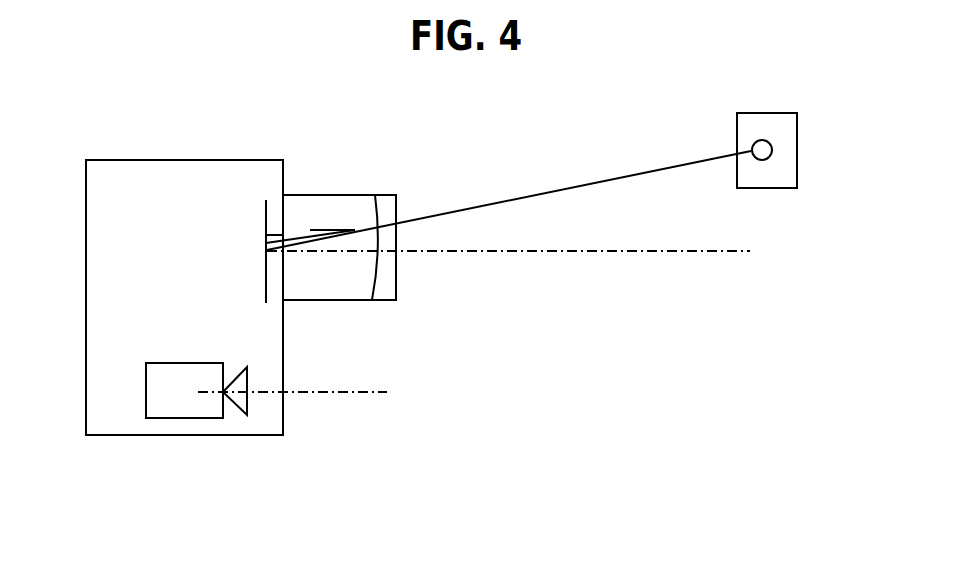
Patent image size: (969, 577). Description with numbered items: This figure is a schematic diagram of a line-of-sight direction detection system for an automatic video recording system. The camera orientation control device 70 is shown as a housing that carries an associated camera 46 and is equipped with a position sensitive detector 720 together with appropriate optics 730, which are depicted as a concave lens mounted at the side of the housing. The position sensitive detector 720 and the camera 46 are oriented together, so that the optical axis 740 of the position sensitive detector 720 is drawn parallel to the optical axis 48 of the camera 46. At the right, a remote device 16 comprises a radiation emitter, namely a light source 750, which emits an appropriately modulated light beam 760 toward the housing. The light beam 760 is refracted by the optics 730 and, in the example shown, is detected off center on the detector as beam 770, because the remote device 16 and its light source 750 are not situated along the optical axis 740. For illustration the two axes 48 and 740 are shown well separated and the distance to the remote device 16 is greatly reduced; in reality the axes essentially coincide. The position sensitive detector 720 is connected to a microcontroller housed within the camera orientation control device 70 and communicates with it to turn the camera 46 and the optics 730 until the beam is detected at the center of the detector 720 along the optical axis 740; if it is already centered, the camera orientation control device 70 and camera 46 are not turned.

The camera orientation control device 70 is at (155, 180).
The optics 730 is at (385, 197).
The position sensitive detector 720 is at (268, 300).
The beam 770 is at (310, 230).
The light beam 760 is at (508, 200).
The optical axis 740 is at (567, 253).
The remote device 16 is at (785, 178).
The light source 750 is at (765, 123).
The camera 46 is at (172, 405).
The optical axis 48 is at (373, 392).